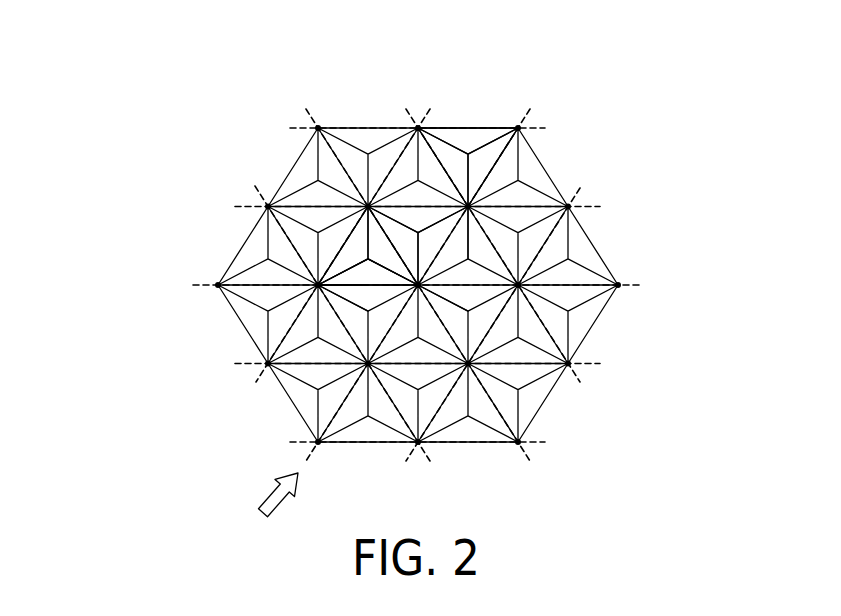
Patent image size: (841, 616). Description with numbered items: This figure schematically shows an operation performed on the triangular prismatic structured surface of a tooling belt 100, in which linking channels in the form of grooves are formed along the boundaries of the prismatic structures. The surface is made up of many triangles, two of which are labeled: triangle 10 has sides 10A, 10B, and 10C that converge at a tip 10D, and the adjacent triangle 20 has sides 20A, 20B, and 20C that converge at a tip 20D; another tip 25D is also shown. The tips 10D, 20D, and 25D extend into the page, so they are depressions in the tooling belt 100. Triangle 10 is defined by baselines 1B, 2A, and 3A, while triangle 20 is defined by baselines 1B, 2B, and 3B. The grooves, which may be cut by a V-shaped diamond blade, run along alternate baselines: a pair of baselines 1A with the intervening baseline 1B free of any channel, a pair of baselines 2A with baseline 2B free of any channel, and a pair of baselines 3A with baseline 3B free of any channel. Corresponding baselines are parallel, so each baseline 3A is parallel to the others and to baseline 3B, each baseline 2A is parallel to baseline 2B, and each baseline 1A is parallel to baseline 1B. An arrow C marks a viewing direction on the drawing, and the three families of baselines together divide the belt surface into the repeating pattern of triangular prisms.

The tooling belt 100 is at (685, 87).
The triangle 10 is at (353, 248).
The side 10A is at (340, 270).
The side 10B is at (407, 245).
The side 10C is at (365, 300).
The tip 10D is at (362, 268).
The triangle 20 is at (472, 197).
The side 20A is at (423, 217).
The side 20B is at (437, 233).
The side 20C is at (438, 220).
The tip 20D is at (455, 300).
The tip 25D is at (470, 258).
The baseline 1A is at (405, 268).
The baseline 1B is at (428, 304).
The baseline 2A is at (426, 268).
The baseline 2B is at (427, 268).
The baseline 3A is at (401, 285).
The baseline 3B is at (435, 285).
The viewing direction arrow C is at (279, 509).